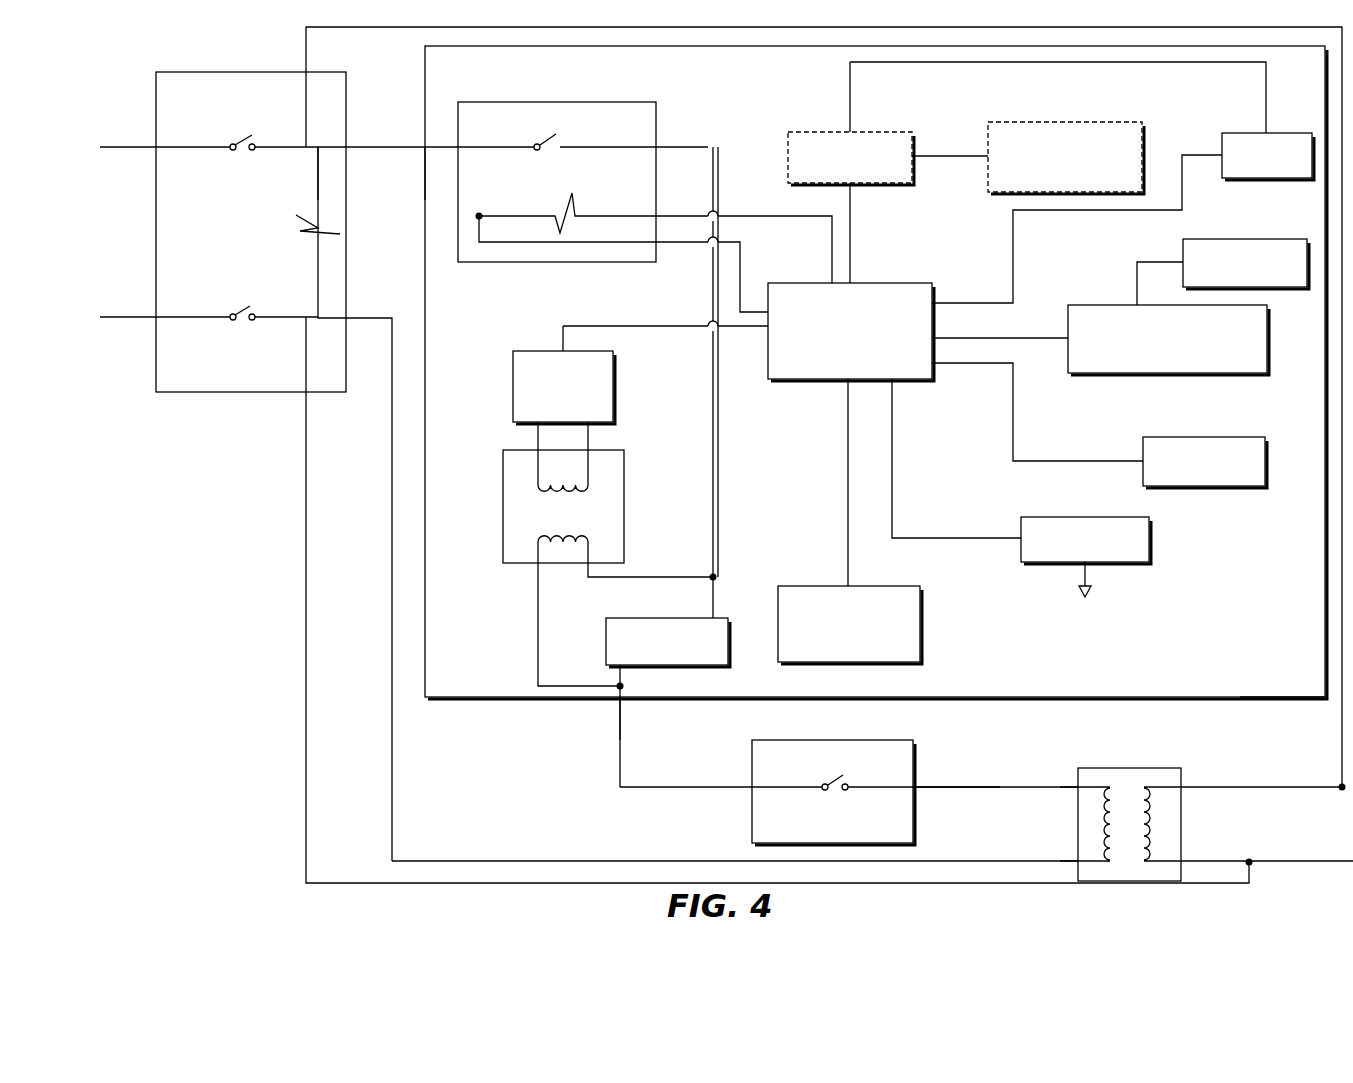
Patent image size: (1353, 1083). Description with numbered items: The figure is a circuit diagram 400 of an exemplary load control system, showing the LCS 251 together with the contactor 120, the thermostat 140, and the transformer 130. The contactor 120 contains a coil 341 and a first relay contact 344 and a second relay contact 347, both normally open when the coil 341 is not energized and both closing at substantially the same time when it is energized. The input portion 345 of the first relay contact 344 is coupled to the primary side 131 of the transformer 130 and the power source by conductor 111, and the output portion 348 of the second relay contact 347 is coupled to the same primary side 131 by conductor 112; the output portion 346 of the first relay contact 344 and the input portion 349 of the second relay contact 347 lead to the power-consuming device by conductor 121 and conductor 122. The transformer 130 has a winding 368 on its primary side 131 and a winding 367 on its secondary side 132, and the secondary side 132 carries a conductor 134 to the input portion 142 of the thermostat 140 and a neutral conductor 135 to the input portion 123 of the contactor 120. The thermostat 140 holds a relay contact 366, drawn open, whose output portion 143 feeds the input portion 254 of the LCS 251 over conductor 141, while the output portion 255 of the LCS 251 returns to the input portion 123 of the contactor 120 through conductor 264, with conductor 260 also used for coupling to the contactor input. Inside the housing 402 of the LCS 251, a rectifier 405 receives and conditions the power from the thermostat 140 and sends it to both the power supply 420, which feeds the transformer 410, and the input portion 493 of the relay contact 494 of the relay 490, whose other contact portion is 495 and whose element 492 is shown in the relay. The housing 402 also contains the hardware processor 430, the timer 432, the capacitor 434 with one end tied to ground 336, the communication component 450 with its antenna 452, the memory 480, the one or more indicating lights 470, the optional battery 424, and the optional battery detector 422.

The circuit diagram 400 is at (228, 812).
The conductor 111 is at (340, 30).
The conductor 112 is at (306, 660).
The contactor 120 is at (236, 71).
The conductor 121 is at (143, 146).
The conductor 122 is at (143, 318).
The input portion of the contactor 123 is at (410, 110).
The transformer 130 is at (1130, 767).
The primary side 131 is at (1200, 778).
The secondary side 132 is at (1058, 778).
The conductor 134 is at (975, 786).
The conductor 135 is at (492, 860).
The thermostat 140 is at (810, 739).
The conductor 141 is at (636, 786).
The input portion of the thermostat 142 is at (938, 800).
The output portion of the thermostat 143 is at (738, 778).
The LCS 251 is at (1247, 700).
The input portion of the LCS 254 is at (606, 712).
The output portion of the LCS 255 is at (416, 162).
The conductor 260 is at (389, 152).
The conductor 264 is at (713, 455).
The ground 336 is at (1088, 594).
The coil 341 is at (311, 232).
The first relay contact 344 is at (242, 150).
The input portion of the first relay contact 345 is at (254, 144).
The output portion of the first relay contact 346 is at (231, 144).
The second relay contact 347 is at (231, 314).
The output portion of the second relay contact 348 is at (254, 320).
The input portion of the second relay contact 349 is at (230, 321).
The relay contact 366 is at (846, 790).
The winding 367 is at (1103, 835).
The winding 368 is at (1150, 835).
The housing 402 is at (876, 372).
The rectifier 405 is at (657, 617).
The transformer 410 is at (624, 510).
The power supply 420 is at (542, 350).
The battery detector 422 is at (1005, 121).
The battery 424 is at (796, 130).
The hardware processor 430 is at (806, 282).
The timer 432 is at (1235, 132).
The capacitor 434 is at (1034, 516).
The communication component 450 is at (1081, 304).
The antenna 452 is at (1246, 238).
The indicating lights 470 is at (792, 585).
The memory 480 is at (1155, 436).
The relay 490 is at (597, 102).
The fuse 492 is at (576, 210).
The input portion of the relay contact 493 is at (560, 142).
The relay contact 494 is at (537, 151).
The switch contact 495 is at (533, 144).